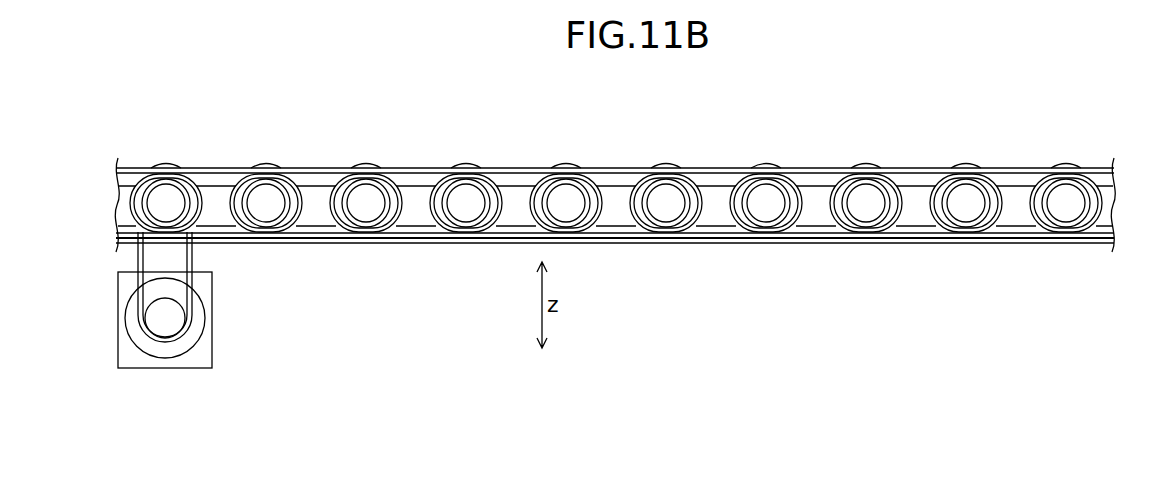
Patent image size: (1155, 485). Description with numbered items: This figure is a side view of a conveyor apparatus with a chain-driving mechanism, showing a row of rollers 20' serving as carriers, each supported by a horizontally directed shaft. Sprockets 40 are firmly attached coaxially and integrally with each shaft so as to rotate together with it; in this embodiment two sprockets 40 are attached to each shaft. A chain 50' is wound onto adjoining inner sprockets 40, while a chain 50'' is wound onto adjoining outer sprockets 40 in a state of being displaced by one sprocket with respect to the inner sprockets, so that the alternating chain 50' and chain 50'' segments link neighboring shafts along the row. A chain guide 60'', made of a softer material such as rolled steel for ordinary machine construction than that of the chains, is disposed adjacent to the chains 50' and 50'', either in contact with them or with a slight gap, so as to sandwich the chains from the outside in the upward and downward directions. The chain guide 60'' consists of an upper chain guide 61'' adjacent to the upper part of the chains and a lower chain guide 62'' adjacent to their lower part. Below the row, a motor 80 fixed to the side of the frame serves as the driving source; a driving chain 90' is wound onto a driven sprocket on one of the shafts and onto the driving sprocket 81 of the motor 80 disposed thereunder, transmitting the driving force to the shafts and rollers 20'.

The roller 20' is at (321, 125).
The sprocket 40 is at (173, 194).
The chain 50' is at (416, 262).
The chain 50'' is at (416, 262).
The chain guide 60'' is at (615, 215).
The upper chain guide 61'' is at (615, 138).
The lower chain guide 62'' is at (615, 279).
The motor 80 is at (197, 370).
The driving sprocket 81 is at (163, 328).
The driving chain 90' is at (121, 287).